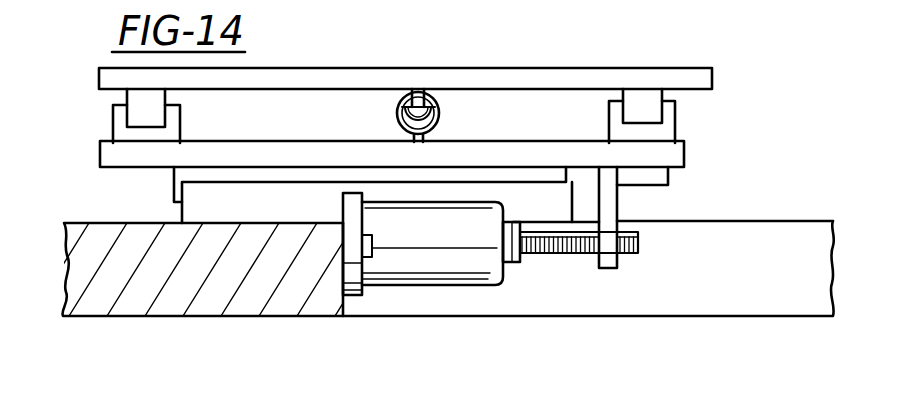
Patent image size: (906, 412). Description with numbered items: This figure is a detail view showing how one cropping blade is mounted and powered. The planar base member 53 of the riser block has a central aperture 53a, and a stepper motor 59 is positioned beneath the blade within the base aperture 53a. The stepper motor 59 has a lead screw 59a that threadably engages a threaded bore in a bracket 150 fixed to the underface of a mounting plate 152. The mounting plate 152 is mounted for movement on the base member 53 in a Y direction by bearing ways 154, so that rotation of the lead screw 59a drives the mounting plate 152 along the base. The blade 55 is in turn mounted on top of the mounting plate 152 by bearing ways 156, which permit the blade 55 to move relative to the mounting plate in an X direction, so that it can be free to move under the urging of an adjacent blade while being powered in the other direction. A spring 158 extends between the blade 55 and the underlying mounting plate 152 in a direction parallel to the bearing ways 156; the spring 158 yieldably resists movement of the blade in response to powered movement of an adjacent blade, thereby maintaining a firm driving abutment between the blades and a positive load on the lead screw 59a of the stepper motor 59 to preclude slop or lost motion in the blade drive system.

The cropping blade 55 is at (491, 68).
The bearing ways 156 is at (112, 117).
The spring 158 is at (396, 118).
The mounting plate 152 is at (687, 143).
The bearing ways 154 is at (175, 196).
The base member 53 is at (193, 318).
The central aperture 53a is at (345, 306).
The stepper motor 59 is at (487, 268).
The lead screw 59a is at (562, 254).
The bracket 150 is at (616, 269).